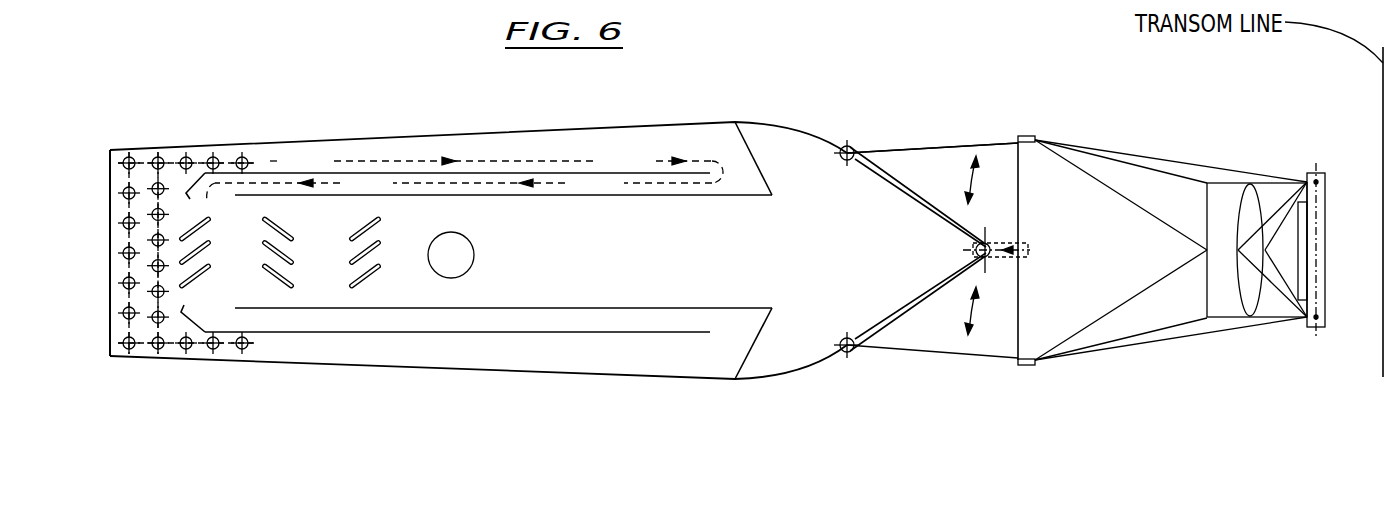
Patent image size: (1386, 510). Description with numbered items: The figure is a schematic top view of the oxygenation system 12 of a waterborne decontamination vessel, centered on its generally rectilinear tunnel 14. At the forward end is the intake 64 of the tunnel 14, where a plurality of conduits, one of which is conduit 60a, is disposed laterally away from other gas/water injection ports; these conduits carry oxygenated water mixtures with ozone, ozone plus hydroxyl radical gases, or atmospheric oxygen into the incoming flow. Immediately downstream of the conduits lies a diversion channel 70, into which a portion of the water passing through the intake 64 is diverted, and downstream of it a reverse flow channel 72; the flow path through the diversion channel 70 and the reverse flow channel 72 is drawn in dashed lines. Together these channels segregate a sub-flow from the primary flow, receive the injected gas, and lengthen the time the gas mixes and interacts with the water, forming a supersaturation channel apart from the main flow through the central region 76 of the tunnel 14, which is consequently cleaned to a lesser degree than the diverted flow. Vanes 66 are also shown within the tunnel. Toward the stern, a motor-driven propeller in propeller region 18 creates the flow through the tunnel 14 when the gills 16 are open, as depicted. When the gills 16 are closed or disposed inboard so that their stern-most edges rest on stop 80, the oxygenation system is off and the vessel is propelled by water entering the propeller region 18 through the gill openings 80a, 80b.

The oxygenation system 12 is at (466, 374).
The tunnel 14 is at (641, 297).
The gills 16 is at (910, 143).
The propeller region 18 is at (1262, 200).
The conduit 60a is at (141, 150).
The intake 64 is at (110, 294).
The flow vanes 66 is at (363, 282).
The diversion channel 70 is at (398, 150).
The reverse flow channel 72 is at (421, 179).
The central region 76 is at (451, 255).
The stop 80 is at (1008, 240).
The gill opening 80a is at (934, 339).
The gill opening 80b is at (941, 236).